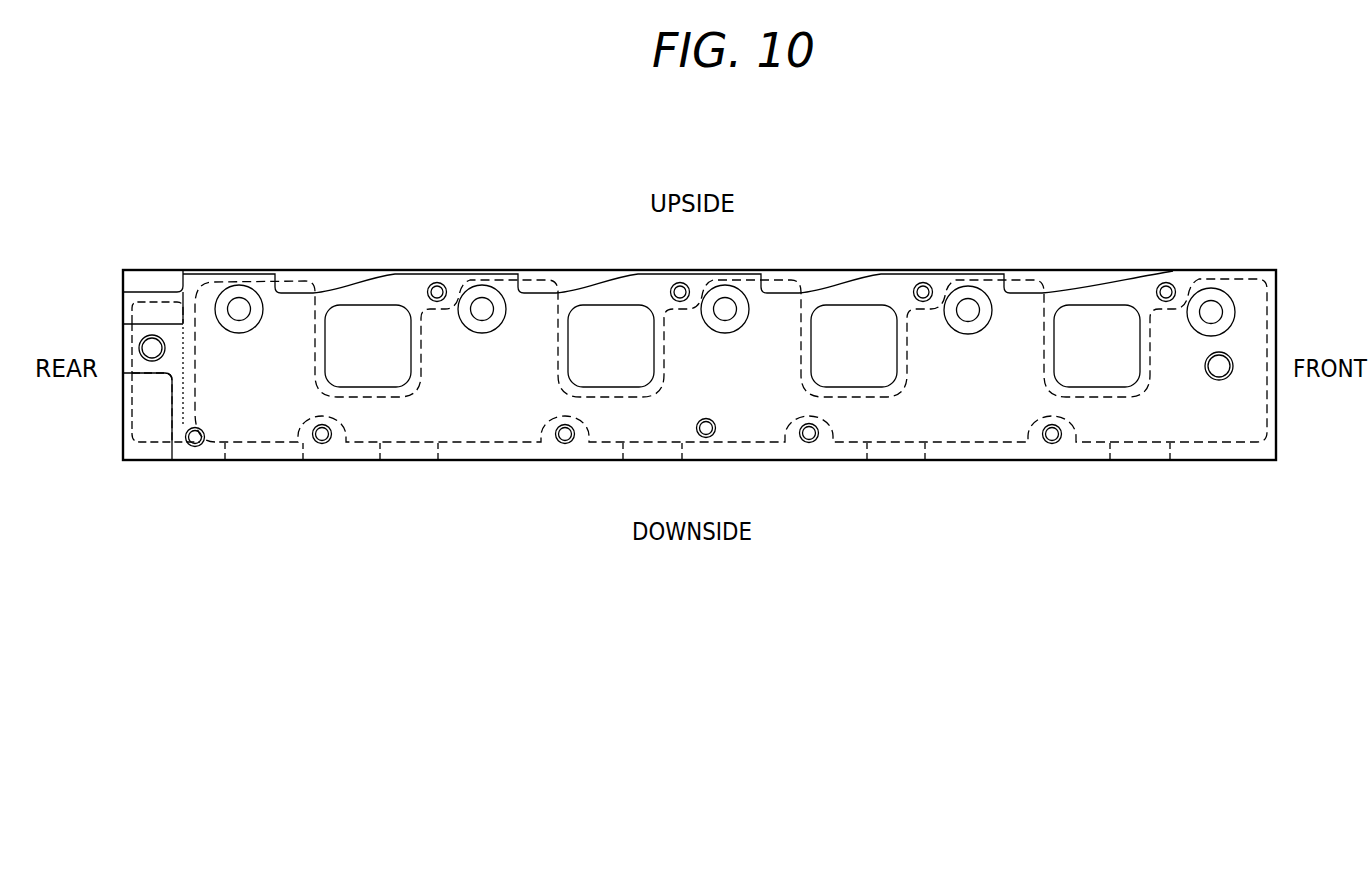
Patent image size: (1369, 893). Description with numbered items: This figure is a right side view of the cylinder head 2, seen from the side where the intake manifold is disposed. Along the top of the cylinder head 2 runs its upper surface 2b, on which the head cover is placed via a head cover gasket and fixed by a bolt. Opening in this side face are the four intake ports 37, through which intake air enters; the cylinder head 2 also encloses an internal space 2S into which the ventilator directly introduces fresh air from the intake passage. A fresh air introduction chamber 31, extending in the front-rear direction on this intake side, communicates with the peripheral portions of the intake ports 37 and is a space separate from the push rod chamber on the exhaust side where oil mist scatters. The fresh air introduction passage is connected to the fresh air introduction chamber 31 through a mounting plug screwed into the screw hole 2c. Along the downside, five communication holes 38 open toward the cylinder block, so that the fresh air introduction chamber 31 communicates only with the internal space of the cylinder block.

The cylinder head 2 is at (705, 315).
The internal space of the cylinder head 2S is at (1193, 266).
The upper surface of the cylinder head 2b is at (892, 273).
The screw hole 2c is at (1227, 360).
The fresh air introduction chamber 31 is at (1228, 422).
The intake ports 37 is at (385, 331).
The communication holes 38 is at (306, 451).